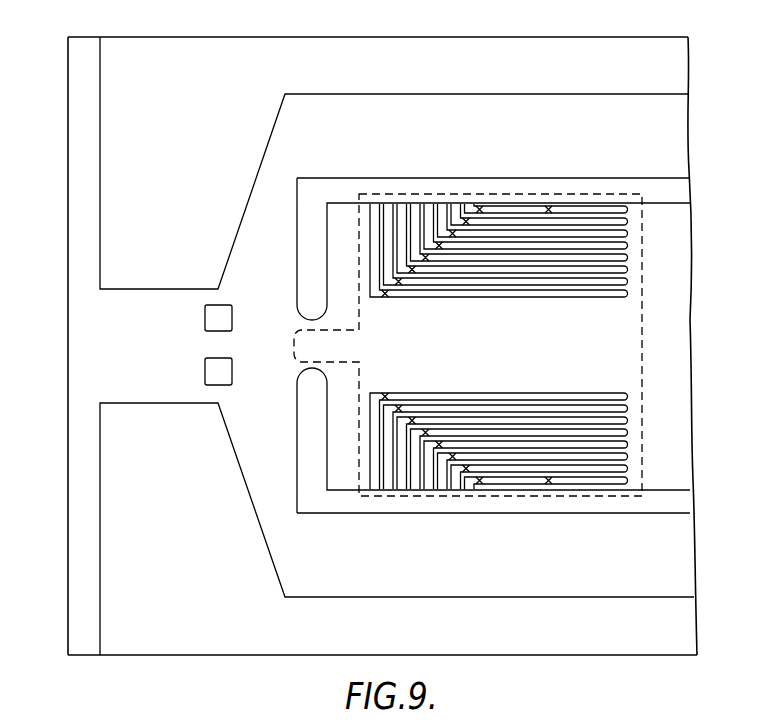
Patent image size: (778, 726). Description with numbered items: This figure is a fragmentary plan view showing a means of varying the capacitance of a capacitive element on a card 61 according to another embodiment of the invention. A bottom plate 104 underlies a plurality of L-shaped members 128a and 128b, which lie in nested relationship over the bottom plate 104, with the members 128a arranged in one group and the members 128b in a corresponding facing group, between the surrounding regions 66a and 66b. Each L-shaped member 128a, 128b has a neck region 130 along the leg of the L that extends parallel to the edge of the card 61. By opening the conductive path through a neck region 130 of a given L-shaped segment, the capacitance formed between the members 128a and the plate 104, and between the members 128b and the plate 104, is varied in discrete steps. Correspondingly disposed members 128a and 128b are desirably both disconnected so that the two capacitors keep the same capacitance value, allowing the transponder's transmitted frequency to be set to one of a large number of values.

The card 61 is at (80, 327).
The upper ground plane section 66a is at (590, 52).
The lower ground plane section 66b is at (555, 647).
The bottom plate 104 is at (643, 330).
The L-shaped member 128a is at (535, 292).
The L-shaped member 128b is at (522, 395).
The neck region 130 is at (386, 300).